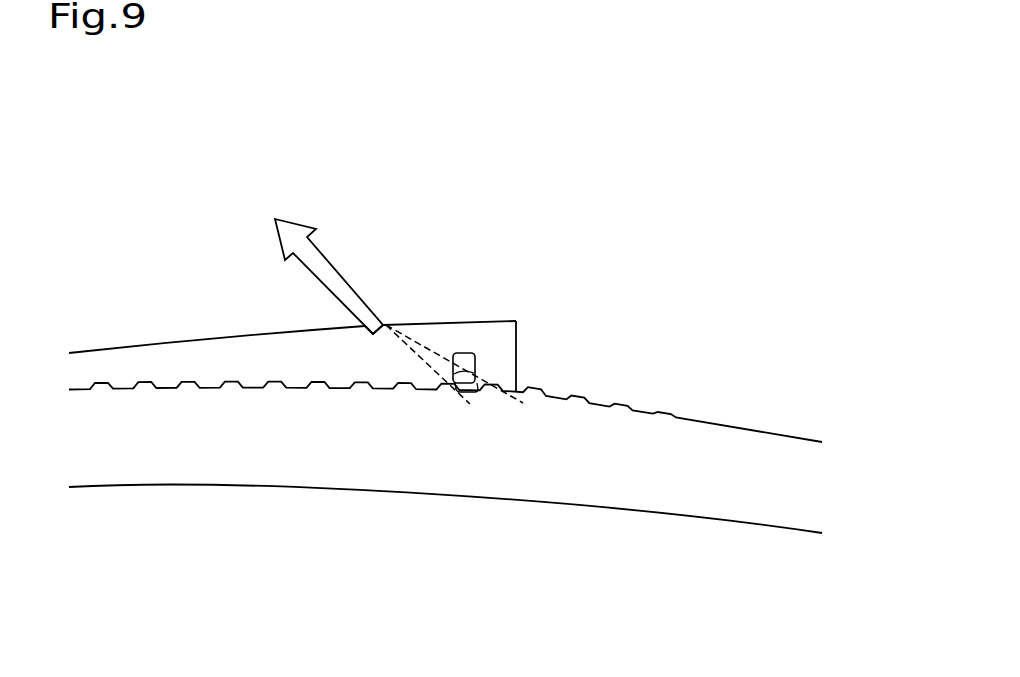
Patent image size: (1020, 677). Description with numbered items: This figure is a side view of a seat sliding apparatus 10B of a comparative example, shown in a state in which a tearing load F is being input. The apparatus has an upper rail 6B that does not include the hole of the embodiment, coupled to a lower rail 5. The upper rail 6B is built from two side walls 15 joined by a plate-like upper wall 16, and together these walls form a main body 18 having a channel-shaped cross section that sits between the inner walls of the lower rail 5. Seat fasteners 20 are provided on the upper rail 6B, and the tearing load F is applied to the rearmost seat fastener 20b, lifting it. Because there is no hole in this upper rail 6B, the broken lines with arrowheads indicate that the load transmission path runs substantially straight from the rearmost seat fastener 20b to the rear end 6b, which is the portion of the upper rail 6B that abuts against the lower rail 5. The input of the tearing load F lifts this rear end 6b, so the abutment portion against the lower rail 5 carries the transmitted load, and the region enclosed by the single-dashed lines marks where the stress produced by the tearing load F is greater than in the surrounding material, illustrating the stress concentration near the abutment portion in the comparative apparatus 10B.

The lower rail 5 is at (751, 428).
The seat sliding apparatus 10B is at (727, 168).
The upper rail 6B is at (217, 315).
The main body 18 is at (202, 339).
The upper wall 16 is at (473, 320).
The rear end 6b is at (516, 321).
The side wall 15 is at (507, 350).
The seat fastener 20 is at (439, 327).
The rearmost seat fastener 20b is at (393, 317).
The tearing load F is at (325, 256).